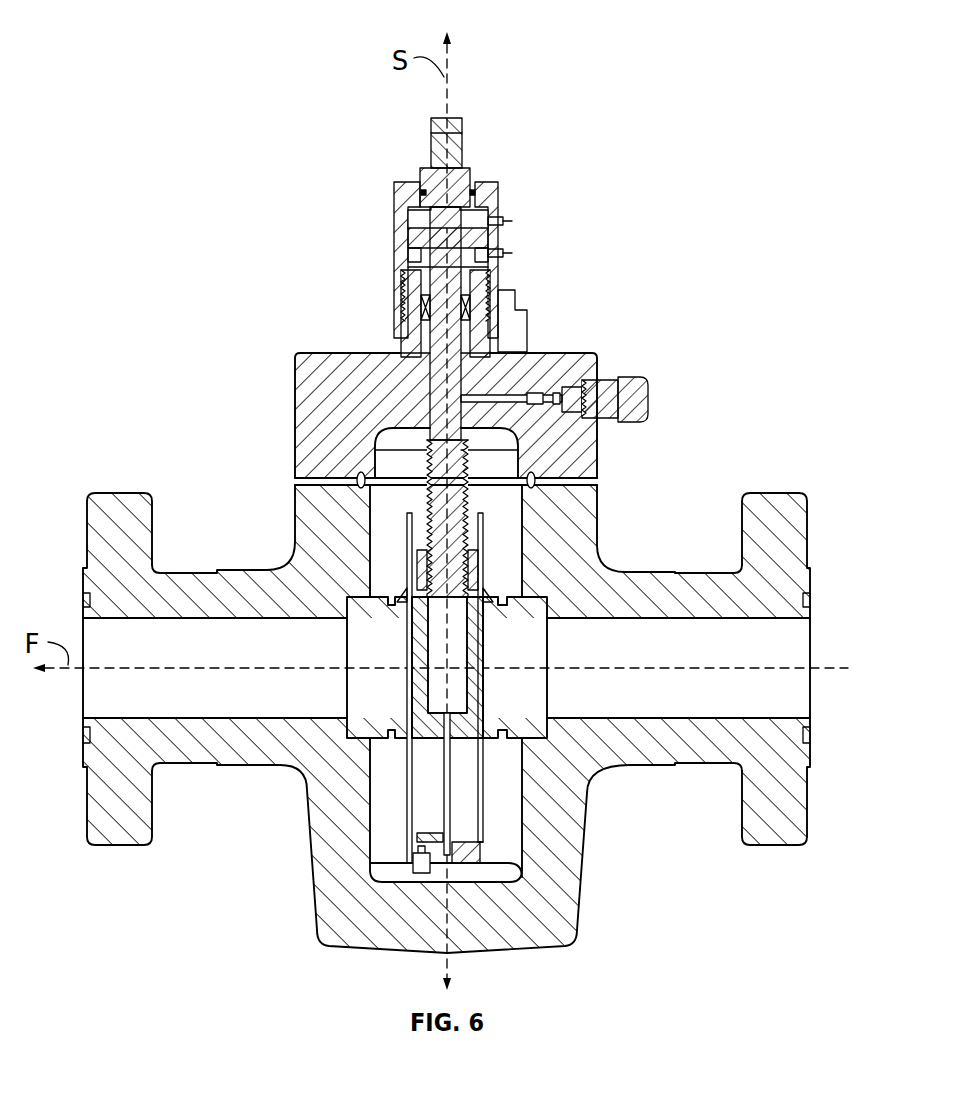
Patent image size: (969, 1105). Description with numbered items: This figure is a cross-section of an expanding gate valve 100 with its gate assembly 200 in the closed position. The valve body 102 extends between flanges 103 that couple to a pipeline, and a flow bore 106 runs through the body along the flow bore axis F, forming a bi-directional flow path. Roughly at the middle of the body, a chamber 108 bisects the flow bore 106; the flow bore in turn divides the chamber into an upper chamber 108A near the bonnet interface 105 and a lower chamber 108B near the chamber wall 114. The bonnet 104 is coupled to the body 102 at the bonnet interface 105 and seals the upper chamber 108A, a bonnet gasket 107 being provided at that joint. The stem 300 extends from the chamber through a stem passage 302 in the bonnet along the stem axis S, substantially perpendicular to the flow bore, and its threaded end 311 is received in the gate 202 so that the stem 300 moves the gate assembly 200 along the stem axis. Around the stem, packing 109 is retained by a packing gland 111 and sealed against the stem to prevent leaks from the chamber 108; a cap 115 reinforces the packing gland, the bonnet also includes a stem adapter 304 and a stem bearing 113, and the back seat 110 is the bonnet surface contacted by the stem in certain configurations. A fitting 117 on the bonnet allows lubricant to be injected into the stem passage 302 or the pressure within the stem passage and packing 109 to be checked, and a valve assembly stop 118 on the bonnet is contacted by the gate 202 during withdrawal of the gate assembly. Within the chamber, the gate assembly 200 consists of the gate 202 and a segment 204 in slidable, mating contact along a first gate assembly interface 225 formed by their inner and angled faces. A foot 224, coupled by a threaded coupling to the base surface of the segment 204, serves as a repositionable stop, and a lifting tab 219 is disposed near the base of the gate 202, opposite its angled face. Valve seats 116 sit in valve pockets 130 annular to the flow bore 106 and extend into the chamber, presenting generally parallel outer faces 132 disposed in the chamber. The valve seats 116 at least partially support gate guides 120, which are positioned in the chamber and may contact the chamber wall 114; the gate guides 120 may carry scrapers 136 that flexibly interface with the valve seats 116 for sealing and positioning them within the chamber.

The valve 100 is at (238, 98).
The body 102 is at (581, 860).
The flanges 103 is at (123, 491).
The bonnet 104 is at (318, 364).
The bonnet interface 105 is at (602, 482).
The flow bore 106 is at (764, 679).
The bonnet gasket 107 is at (413, 537).
The chamber 108 is at (502, 458).
The upper chamber 108A is at (602, 413).
The lower chamber 108B is at (383, 782).
The packing 109 is at (521, 314).
The back seat 110 is at (541, 352).
The packing gland 111 is at (482, 288).
The stem bearing 113 is at (509, 219).
The chamber wall 114 is at (388, 897).
The cap 115 is at (395, 182).
The valve seats 116 is at (390, 728).
The fitting 117 is at (630, 393).
The valve assembly stop 118 is at (427, 423).
The gate guides 120 is at (487, 830).
The valve pockets 130 is at (555, 656).
The outer faces 132 is at (403, 704).
The scrapers 136 is at (509, 537).
The gate assembly 200 is at (423, 625).
The gate 202 is at (502, 588).
The segment 204 is at (395, 645).
The lifting tab 219 is at (505, 874).
The foot 224 is at (420, 876).
The first gate assembly interface 225 is at (455, 712).
The stem 300 is at (438, 368).
The stem passage 302 is at (424, 302).
The stem adapter 304 is at (466, 177).
The threaded end 311 is at (356, 479).